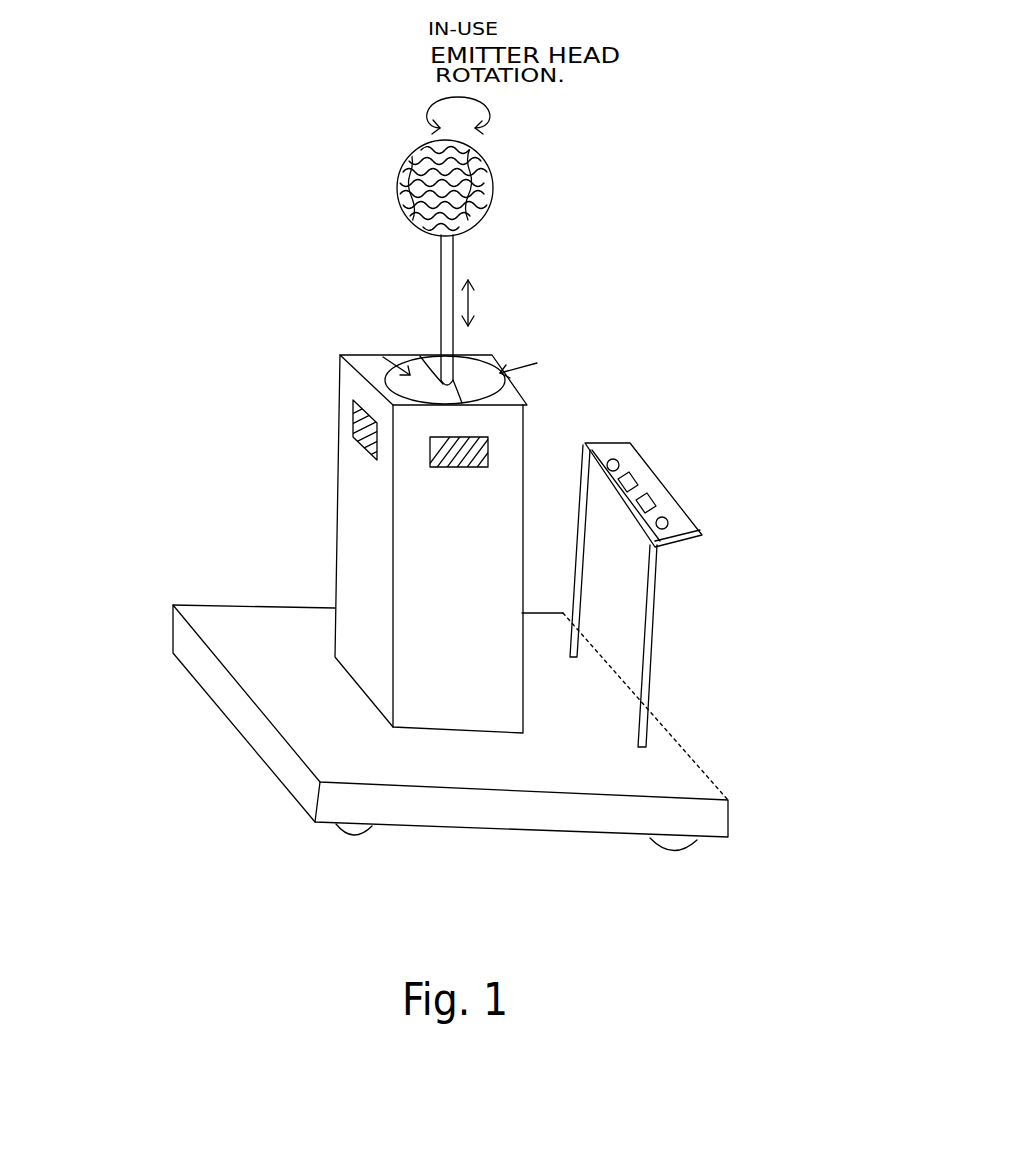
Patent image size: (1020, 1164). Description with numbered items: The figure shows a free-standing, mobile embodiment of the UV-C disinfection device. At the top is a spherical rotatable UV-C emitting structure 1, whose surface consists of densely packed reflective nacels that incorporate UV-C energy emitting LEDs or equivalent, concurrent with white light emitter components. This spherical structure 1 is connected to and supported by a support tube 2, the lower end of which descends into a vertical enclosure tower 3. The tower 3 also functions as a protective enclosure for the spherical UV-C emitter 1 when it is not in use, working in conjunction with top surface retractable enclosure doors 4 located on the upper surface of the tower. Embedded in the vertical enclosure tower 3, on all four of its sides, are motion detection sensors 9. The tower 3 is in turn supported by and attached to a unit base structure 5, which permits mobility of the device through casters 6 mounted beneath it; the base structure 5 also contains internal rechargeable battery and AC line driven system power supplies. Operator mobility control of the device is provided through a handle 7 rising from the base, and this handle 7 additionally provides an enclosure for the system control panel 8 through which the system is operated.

The spherical rotatable UV-C emitting structure 1 is at (628, 168).
The support tube 2 is at (776, 225).
The vertical enclosure tower 3 is at (602, 528).
The top surface retractable enclosure doors 4 is at (318, 326).
The unit base structure 5 is at (313, 707).
The casters 6 is at (373, 837).
The handle 7 is at (730, 596).
The system control panel 8 is at (735, 495).
The motion detection sensors 9 is at (301, 464).